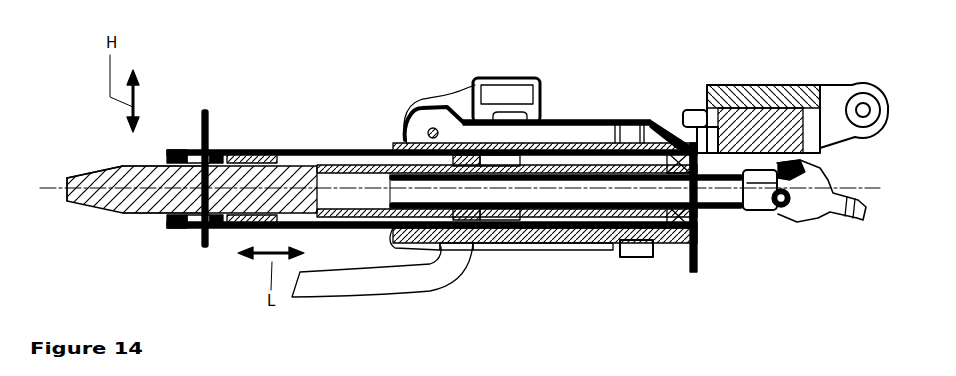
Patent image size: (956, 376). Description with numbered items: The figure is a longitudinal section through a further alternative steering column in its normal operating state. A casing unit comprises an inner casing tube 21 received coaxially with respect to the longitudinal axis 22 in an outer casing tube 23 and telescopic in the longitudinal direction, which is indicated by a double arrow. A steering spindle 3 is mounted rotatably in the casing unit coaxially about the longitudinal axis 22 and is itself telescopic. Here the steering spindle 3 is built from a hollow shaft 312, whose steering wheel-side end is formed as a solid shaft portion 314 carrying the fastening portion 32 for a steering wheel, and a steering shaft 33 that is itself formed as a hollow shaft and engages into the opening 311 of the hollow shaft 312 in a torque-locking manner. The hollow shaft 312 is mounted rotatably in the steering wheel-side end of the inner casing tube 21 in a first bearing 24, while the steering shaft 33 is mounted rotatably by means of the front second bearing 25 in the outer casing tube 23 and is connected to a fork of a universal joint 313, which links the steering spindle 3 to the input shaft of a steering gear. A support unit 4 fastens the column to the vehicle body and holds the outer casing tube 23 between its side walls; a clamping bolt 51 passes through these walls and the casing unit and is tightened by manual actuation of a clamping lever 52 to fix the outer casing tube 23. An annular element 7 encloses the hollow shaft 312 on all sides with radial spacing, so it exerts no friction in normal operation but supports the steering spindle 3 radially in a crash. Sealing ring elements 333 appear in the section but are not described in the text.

The steering spindle 3 is at (133, 215).
The longitudinal axis 22 is at (62, 186).
The fastening portion 32 is at (79, 176).
The solid shaft portion 314 is at (143, 178).
The inner casing tube 21 is at (347, 180).
The seal rings 333 is at (257, 152).
The first bearing 24 is at (177, 228).
The hollow shaft 312 is at (284, 162).
The steering shaft 33 is at (648, 122).
The opening 311 is at (350, 170).
The clamping bolt 51 is at (431, 127).
The support unit 4 is at (528, 78).
The outer casing tube 23 is at (606, 120).
The second bearing 25 is at (680, 224).
The annular element 7 is at (500, 250).
The clamping lever 52 is at (446, 276).
The universal joint 313 is at (785, 240).